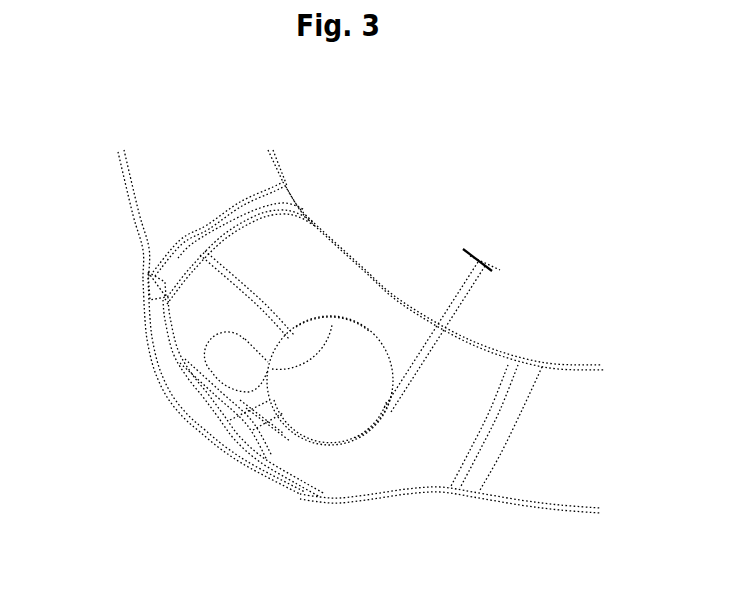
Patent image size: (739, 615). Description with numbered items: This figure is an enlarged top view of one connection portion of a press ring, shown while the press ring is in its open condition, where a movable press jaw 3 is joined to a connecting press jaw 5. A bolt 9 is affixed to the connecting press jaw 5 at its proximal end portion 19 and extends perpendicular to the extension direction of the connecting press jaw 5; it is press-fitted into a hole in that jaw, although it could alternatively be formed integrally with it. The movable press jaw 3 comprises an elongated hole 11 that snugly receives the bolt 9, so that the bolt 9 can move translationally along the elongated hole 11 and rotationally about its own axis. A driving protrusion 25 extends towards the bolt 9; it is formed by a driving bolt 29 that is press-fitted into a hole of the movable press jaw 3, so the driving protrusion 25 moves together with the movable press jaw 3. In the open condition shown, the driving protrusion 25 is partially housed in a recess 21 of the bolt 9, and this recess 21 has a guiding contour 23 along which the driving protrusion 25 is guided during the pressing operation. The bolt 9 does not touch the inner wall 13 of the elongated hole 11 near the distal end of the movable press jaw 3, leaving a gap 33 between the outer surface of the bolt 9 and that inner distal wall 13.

The movable press jaw 3 is at (550, 445).
The connecting press jaw 5 is at (182, 185).
The bolt 9 is at (313, 421).
The elongated hole 11 is at (331, 470).
The inner wall 13 is at (378, 428).
The end portion 19 is at (136, 470).
The recess 21 is at (295, 345).
The guiding contour 23 is at (332, 334).
The driving protrusion 25 is at (270, 368).
The driving bolt 29 is at (227, 353).
The gap 33 is at (449, 317).